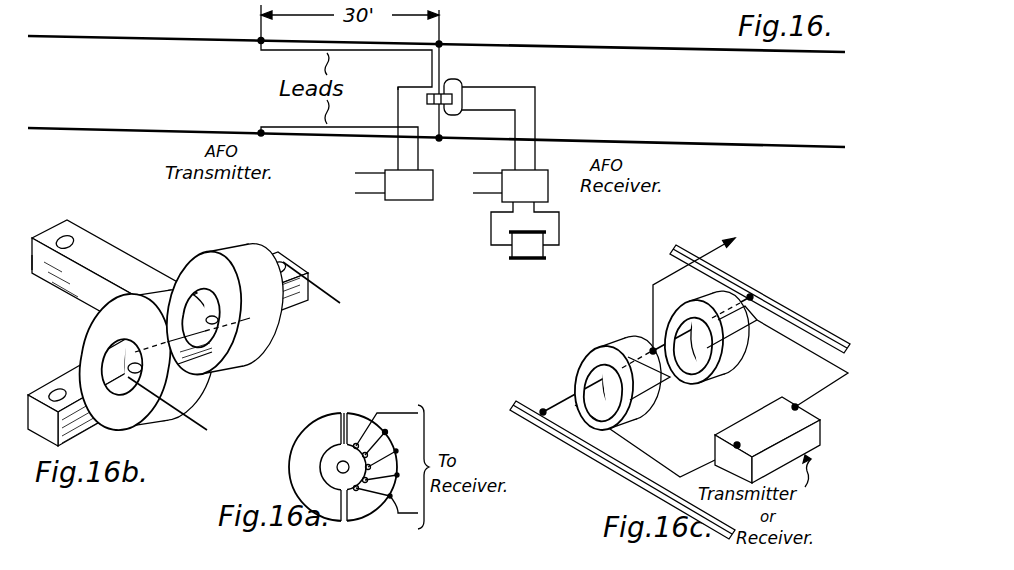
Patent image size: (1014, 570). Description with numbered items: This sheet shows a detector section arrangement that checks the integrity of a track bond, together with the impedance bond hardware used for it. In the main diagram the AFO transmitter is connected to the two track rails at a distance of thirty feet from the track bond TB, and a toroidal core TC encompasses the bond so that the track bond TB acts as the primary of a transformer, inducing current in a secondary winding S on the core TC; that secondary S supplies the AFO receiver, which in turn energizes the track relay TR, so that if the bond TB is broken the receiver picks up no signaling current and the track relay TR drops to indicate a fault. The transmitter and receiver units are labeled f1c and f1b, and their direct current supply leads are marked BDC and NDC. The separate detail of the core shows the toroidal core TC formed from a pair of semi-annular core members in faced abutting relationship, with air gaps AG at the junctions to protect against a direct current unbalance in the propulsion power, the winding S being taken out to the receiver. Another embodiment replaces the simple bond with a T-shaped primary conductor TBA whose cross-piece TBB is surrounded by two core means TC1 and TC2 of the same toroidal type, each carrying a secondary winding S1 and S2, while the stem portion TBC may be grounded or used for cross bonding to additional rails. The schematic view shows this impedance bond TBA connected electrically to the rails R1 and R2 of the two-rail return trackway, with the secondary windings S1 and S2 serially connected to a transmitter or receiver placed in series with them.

In FIG. 16, the track bond TB is at (441, 58).
In FIG. 16a, the track bond TB is at (336, 467).
In FIG. 16, the toroidal core TC is at (427, 100).
In FIG. 16a, the toroidal core TC is at (305, 434).
In FIG. 16, the secondary winding S is at (463, 100).
In FIG. 16a, the secondary winding S is at (388, 432).
In FIG. 16, the battery direct current lead BDC is at (419, 165).
In FIG. 16, the negative direct current lead NDC is at (418, 185).
In FIG. 16, the transmitter unit f1c is at (393, 198).
In FIG. 16, the receiver unit f1b is at (549, 201).
In FIG. 16, the track relay TR is at (525, 230).
In FIG. 16b, the stem portion TBC is at (86, 246).
In FIG. 16c, the stem portion TBC is at (655, 284).
In FIG. 16b, the T-shaped primary conductor TBA is at (50, 298).
In FIG. 16c, the T-shaped primary conductor TBA is at (642, 340).
In FIG. 16c, the cross-piece TBB is at (567, 412).
In FIG. 16b, the core means TC1 is at (82, 343).
In FIG. 16c, the core means TC1 is at (590, 352).
In FIG. 16b, the core means TC2 is at (214, 255).
In FIG. 16c, the core means TC2 is at (729, 371).
In FIG. 16b, the secondary winding S1 is at (156, 396).
In FIG. 16c, the secondary winding S1 is at (668, 382).
In FIG. 16b, the secondary winding S2 is at (283, 333).
In FIG. 16c, the secondary winding S2 is at (757, 334).
In FIG. 16a, the air gaps AG is at (344, 412).
In FIG. 16c, the rail R1 is at (530, 401).
In FIG. 16c, the rail R2 is at (746, 279).